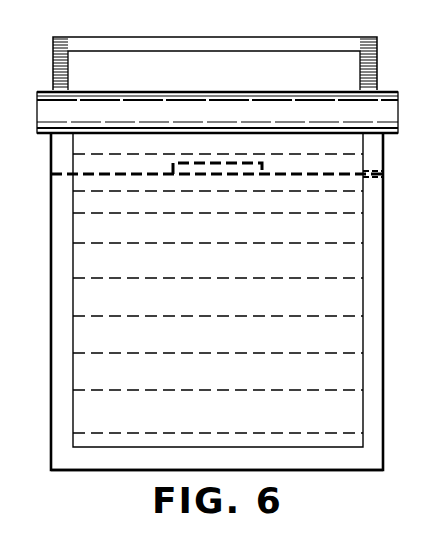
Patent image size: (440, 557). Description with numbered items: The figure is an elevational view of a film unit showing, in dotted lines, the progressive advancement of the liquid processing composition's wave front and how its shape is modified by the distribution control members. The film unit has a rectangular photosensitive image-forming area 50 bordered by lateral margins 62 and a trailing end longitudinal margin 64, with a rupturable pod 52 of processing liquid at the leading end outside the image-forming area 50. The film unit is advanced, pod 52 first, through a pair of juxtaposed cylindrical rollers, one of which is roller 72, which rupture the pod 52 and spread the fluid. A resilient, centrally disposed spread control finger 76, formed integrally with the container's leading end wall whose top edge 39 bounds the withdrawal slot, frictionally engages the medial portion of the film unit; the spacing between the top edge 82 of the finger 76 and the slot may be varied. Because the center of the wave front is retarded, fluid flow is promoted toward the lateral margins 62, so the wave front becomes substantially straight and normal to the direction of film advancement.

The top edge 39 is at (365, 172).
The photosensitive image-forming area 50 is at (238, 341).
The rupturable pod 52 is at (163, 66).
The lateral margins 62 is at (51, 265).
The trailing end longitudinal margin 64 is at (330, 471).
The cylindrical roller 72 is at (45, 97).
The spread control finger 76 is at (203, 177).
The top edge of finger 82 is at (205, 163).